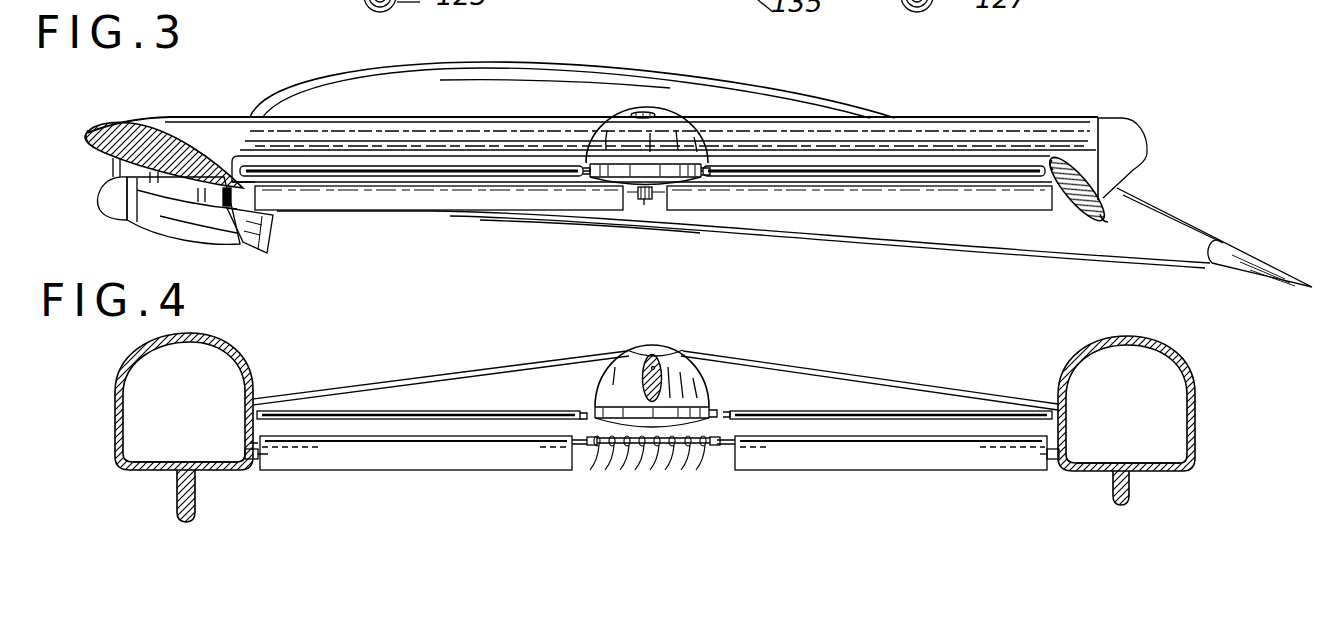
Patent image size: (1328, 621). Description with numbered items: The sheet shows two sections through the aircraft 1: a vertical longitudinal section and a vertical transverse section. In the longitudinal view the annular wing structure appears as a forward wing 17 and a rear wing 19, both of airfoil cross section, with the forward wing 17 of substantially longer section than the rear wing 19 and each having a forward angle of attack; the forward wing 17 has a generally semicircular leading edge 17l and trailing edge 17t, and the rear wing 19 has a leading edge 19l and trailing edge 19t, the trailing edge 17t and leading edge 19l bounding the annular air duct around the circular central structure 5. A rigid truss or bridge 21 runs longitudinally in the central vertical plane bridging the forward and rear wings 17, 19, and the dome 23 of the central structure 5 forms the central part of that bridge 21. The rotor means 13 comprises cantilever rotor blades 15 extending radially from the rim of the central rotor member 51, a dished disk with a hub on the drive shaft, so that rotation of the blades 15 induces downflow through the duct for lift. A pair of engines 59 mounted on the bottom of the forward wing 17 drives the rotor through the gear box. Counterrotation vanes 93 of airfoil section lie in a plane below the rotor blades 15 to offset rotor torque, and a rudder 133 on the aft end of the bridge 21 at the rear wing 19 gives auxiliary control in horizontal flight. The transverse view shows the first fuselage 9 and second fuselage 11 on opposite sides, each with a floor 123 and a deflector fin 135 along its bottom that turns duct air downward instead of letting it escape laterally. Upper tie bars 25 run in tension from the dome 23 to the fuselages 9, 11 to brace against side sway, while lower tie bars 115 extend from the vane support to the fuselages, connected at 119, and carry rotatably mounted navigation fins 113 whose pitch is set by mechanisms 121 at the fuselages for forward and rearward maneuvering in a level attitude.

In FIG. 3, the aircraft 1 is at (266, 74).
In FIG. 4, the aircraft 1 is at (1074, 334).
In FIG. 4, the circular central structure 5 is at (641, 330).
In FIG. 3, the first fuselage 9 is at (347, 90).
In FIG. 4, the first fuselage 9 is at (1180, 355).
In FIG. 4, the second fuselage 11 is at (127, 348).
In FIG. 3, the rotor means 13 is at (575, 153).
In FIG. 4, the rotor means 13 is at (571, 396).
In FIG. 3, the rotor blade 15 is at (410, 170).
In FIG. 4, the rotor blade 15 is at (462, 392).
In FIG. 3, the forward wing 17 is at (98, 155).
In FIG. 3, the leading edge of forward wing 17l is at (86, 134).
In FIG. 3, the trailing edge of forward wing 17t is at (221, 208).
In FIG. 3, the rear wing 19 is at (1084, 204).
In FIG. 3, the leading edge of rear wing 19l is at (1055, 158).
In FIG. 3, the trailing edge of rear wing 19t is at (1103, 220).
In FIG. 3, the bridge 21 is at (165, 120).
In FIG. 4, the bridge 21 is at (665, 360).
In FIG. 3, the dome 23 is at (715, 140).
In FIG. 3, the tie bars 25 is at (667, 115).
In FIG. 4, the tie bars 25 is at (373, 382).
In FIG. 3, the central rotor member 51 is at (638, 188).
In FIG. 3, the engines 59 is at (167, 213).
In FIG. 3, the counterrotation vanes 93 is at (440, 200).
In FIG. 3, the navigation fins 113 is at (648, 200).
In FIG. 4, the navigation fins 113 is at (465, 458).
In FIG. 4, the lower tie bars 115 is at (590, 448).
In FIG. 4, the connection of lower tie bars to fuselages 119 is at (252, 437).
In FIG. 4, the pitch adjusting mechanisms 121 is at (253, 462).
In FIG. 4, the fuselage floor 123 is at (218, 458).
In FIG. 3, the rudder 133 is at (1125, 145).
In FIG. 4, the deflector fin 135 is at (178, 496).